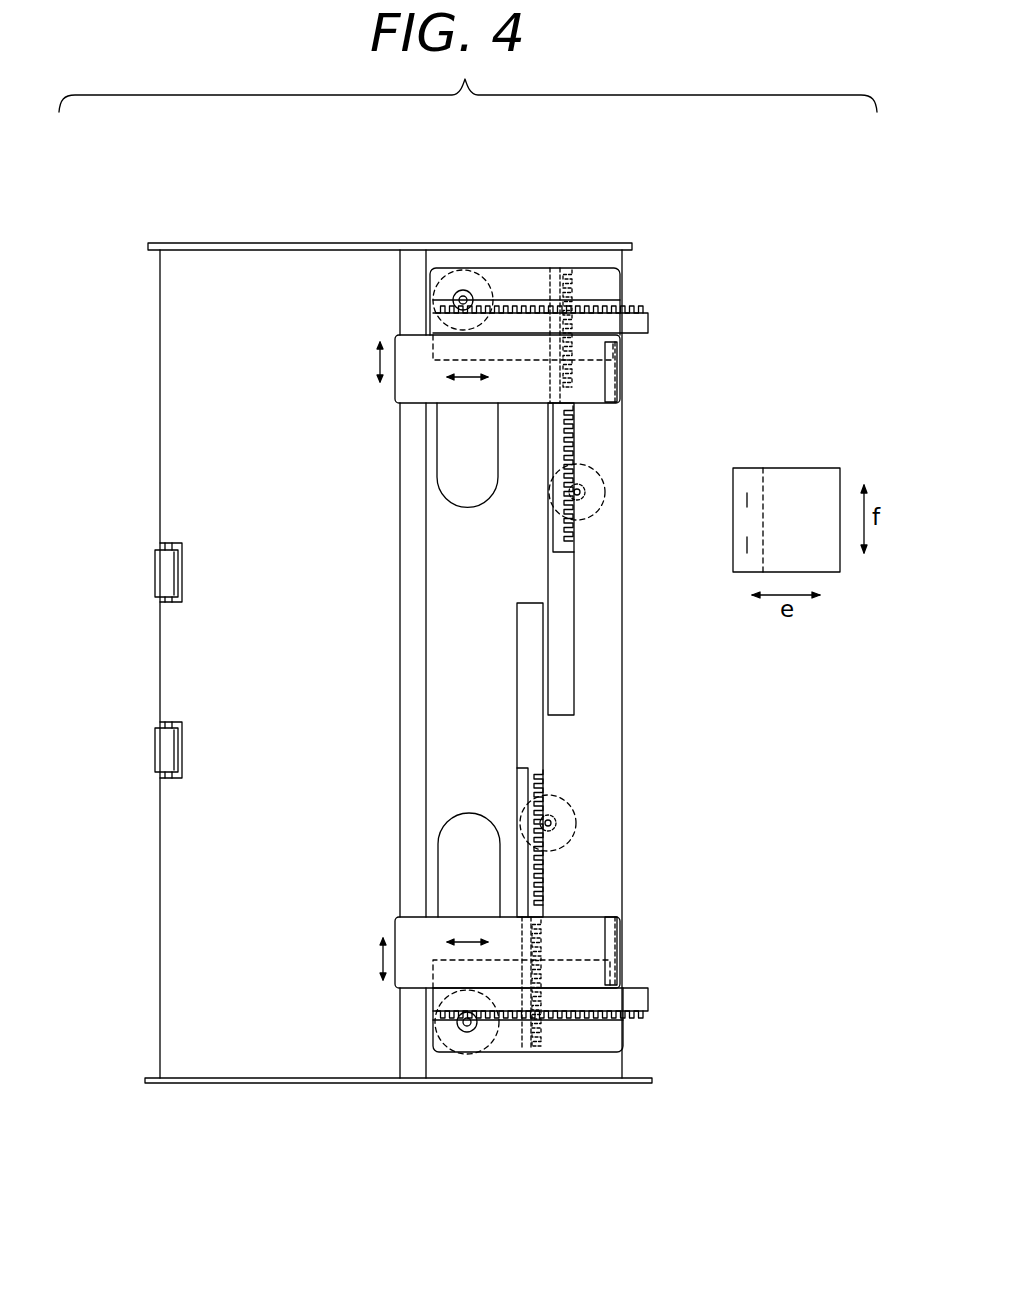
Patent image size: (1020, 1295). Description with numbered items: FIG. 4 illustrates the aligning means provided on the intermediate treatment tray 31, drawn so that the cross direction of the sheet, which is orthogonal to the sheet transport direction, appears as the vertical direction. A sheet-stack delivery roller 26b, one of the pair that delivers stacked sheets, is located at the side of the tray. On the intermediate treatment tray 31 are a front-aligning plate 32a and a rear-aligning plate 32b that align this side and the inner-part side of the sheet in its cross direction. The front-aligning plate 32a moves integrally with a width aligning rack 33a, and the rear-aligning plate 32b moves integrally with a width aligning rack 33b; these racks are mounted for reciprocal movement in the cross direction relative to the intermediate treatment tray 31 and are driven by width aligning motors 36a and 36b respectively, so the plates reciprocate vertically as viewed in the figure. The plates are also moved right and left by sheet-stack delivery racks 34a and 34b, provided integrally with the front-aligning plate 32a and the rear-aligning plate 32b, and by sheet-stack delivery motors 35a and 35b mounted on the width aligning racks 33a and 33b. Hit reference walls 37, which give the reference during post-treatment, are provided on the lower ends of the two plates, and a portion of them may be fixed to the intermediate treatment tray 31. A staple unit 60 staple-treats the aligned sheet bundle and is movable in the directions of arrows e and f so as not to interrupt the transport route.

The sheet-stack delivery roller 26b is at (157, 568).
The intermediate treatment tray 31 is at (600, 604).
The front-aligning plate 32a is at (412, 990).
The rear-aligning plate 32b is at (414, 333).
The width aligning rack 33a is at (533, 1052).
The width aligning rack 33b is at (566, 272).
The sheet-stack delivery rack 34a is at (640, 998).
The sheet-stack delivery rack 34b is at (643, 315).
The sheet-stack delivery motor 35a is at (465, 1032).
The sheet-stack delivery motor 35b is at (477, 296).
The width aligning motor 36a is at (560, 832).
The width aligning motor 36b is at (582, 487).
The hit reference wall 37 is at (623, 375).
The staple unit 60 is at (816, 478).